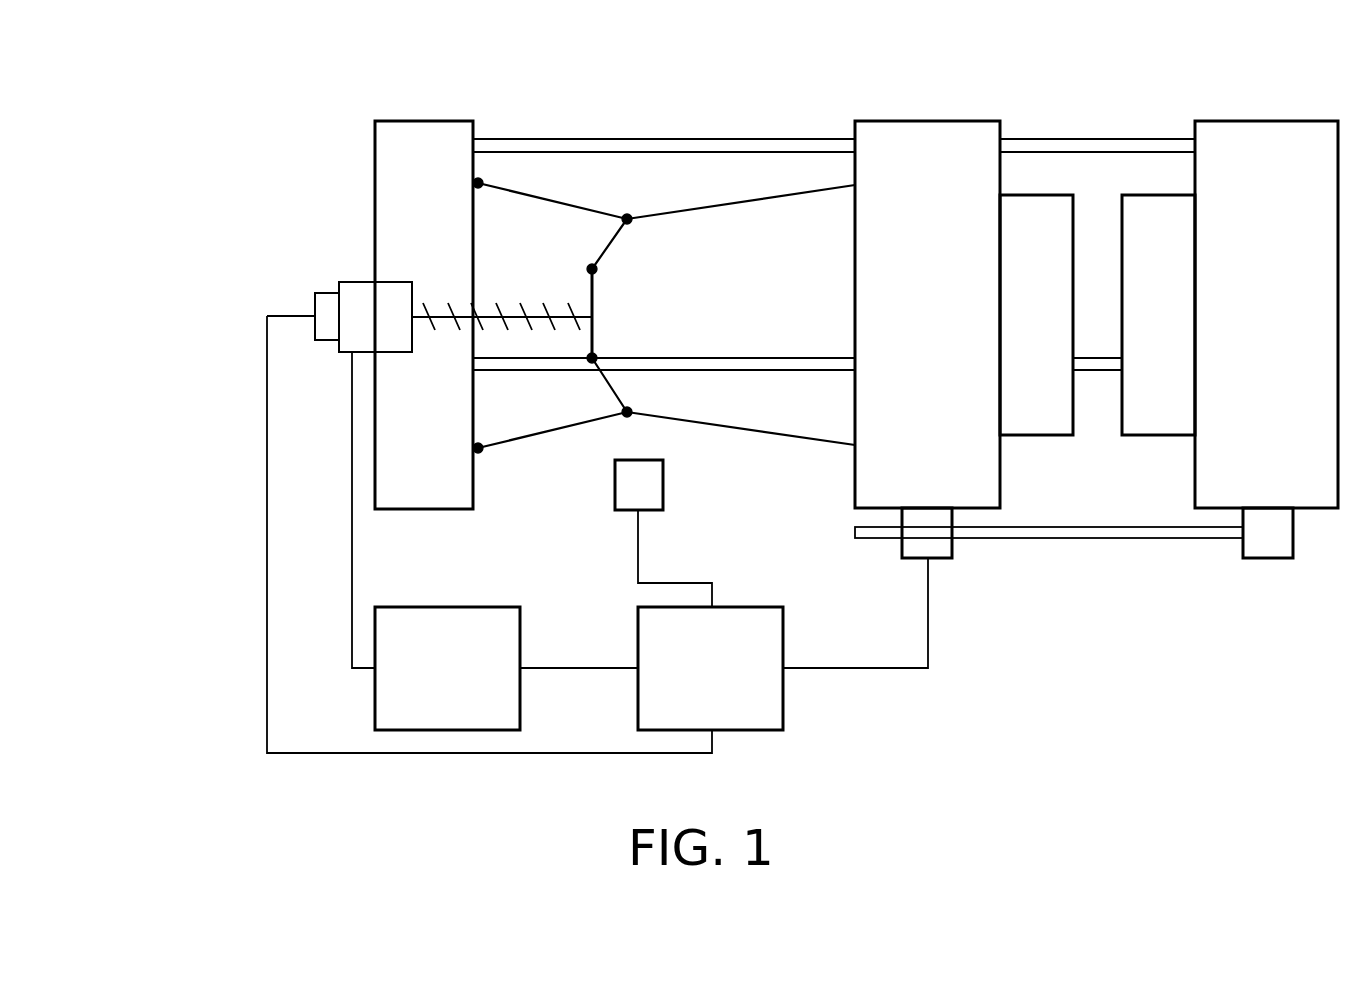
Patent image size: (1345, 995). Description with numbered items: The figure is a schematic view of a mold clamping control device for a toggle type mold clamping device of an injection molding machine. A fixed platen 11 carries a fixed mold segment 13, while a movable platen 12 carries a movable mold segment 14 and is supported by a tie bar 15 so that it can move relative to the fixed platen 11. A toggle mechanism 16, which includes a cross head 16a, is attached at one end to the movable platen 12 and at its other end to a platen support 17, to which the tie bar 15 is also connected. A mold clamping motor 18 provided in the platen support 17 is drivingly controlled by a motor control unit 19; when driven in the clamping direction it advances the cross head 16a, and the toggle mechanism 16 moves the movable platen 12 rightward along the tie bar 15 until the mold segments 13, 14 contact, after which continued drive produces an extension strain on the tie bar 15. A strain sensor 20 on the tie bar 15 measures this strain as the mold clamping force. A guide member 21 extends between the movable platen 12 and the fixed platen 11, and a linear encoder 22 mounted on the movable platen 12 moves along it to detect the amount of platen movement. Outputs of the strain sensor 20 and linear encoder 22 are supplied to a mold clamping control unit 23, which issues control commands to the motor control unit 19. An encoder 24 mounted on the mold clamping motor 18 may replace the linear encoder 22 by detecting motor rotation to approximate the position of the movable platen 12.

The fixed platen 11 is at (1294, 121).
The movable platen 12 is at (952, 121).
The fixed mold segment 13 is at (1159, 195).
The movable mold segment 14 is at (1037, 195).
The tie bar 15 is at (689, 139).
The toggle mechanism 16 is at (568, 203).
The cross head 16a is at (592, 293).
The platen support 17 is at (398, 121).
The mold clamping motor 18 is at (339, 347).
The motor control unit 19 is at (520, 630).
The strain sensor 20 is at (663, 483).
The guide member 21 is at (1094, 527).
The linear encoder 22 is at (952, 550).
The mold clamping control unit 23 is at (783, 630).
The encoder 24 is at (315, 305).